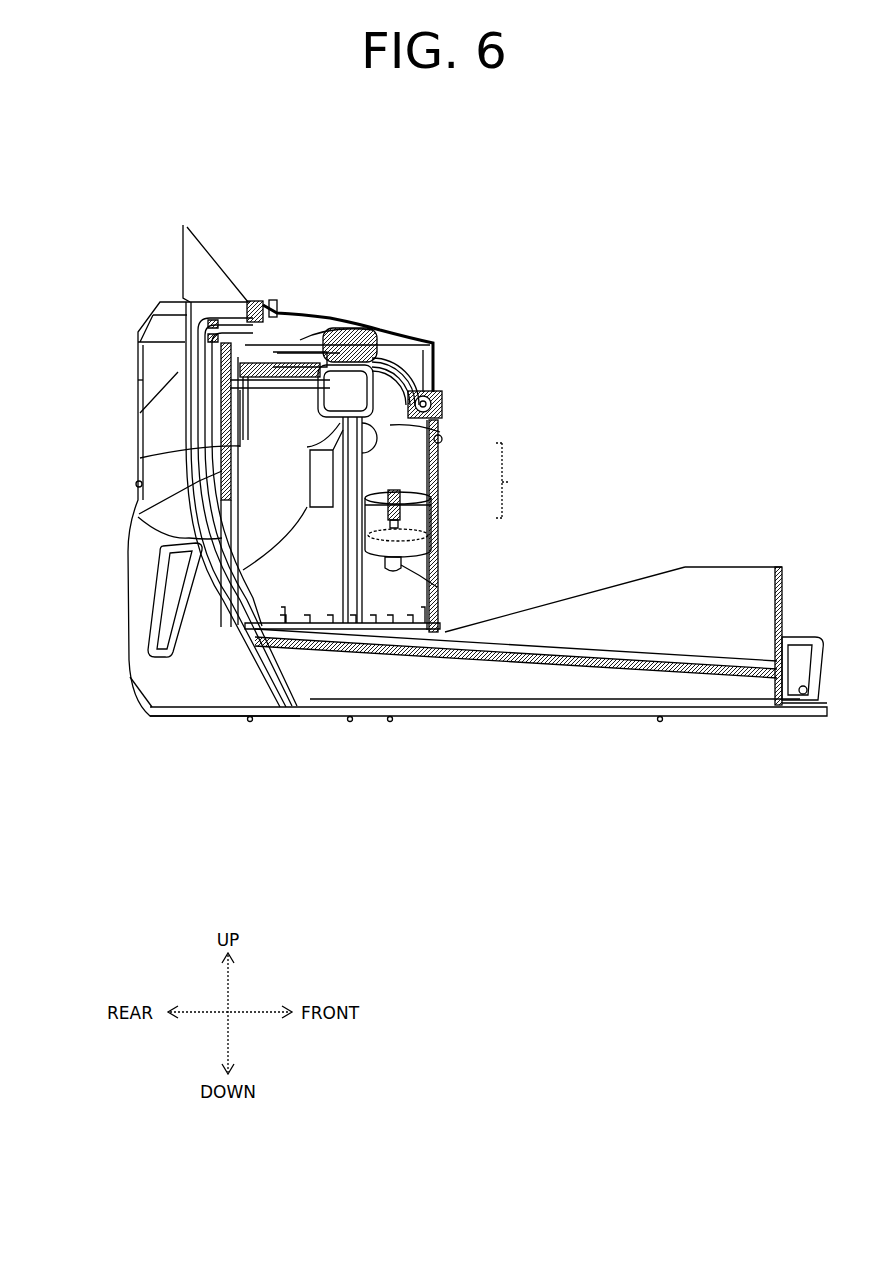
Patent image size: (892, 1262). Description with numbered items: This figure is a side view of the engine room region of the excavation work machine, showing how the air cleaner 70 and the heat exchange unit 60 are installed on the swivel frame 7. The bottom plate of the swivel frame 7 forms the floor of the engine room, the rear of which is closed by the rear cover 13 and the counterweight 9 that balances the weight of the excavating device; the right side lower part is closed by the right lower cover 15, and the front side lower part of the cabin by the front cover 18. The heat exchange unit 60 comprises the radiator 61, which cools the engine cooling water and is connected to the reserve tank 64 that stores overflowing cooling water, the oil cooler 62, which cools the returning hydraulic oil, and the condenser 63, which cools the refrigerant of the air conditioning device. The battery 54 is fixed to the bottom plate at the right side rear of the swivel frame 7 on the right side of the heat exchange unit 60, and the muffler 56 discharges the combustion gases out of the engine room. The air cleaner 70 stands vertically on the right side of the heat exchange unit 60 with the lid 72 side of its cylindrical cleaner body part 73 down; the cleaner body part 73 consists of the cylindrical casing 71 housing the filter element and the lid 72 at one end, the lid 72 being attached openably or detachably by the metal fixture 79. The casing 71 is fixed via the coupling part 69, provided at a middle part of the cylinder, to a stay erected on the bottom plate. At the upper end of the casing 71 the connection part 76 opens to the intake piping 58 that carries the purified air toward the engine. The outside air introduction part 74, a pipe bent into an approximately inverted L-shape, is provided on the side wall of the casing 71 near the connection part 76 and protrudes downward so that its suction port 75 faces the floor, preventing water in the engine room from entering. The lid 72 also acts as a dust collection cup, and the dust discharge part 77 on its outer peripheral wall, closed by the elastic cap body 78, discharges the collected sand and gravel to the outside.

The swivel frame 7 is at (660, 720).
The counterweight 9 is at (128, 629).
The rear cover 13 is at (138, 388).
The right lower cover 15 is at (510, 680).
The front cover 18 is at (796, 660).
The battery 54 is at (403, 632).
The muffler 56 is at (183, 228).
The intake piping 58 is at (405, 336).
The heat exchange unit 60 is at (352, 275).
The radiator 61 is at (445, 395).
The oil cooler 62 is at (282, 365).
The condenser 63 is at (138, 517).
The reserve tank 64 is at (360, 330).
The coupling part 69 is at (343, 512).
The air cleaner 70 is at (467, 588).
The casing 71 is at (412, 447).
The lid 72 is at (418, 518).
The cleaner body part 73 is at (518, 480).
The outside air introduction part 74 is at (307, 447).
The suction port 75 is at (243, 570).
The connection part 76 is at (445, 430).
The dust discharge part 77 is at (425, 585).
The cap body 78 is at (468, 576).
The metal fixture 79 is at (420, 572).